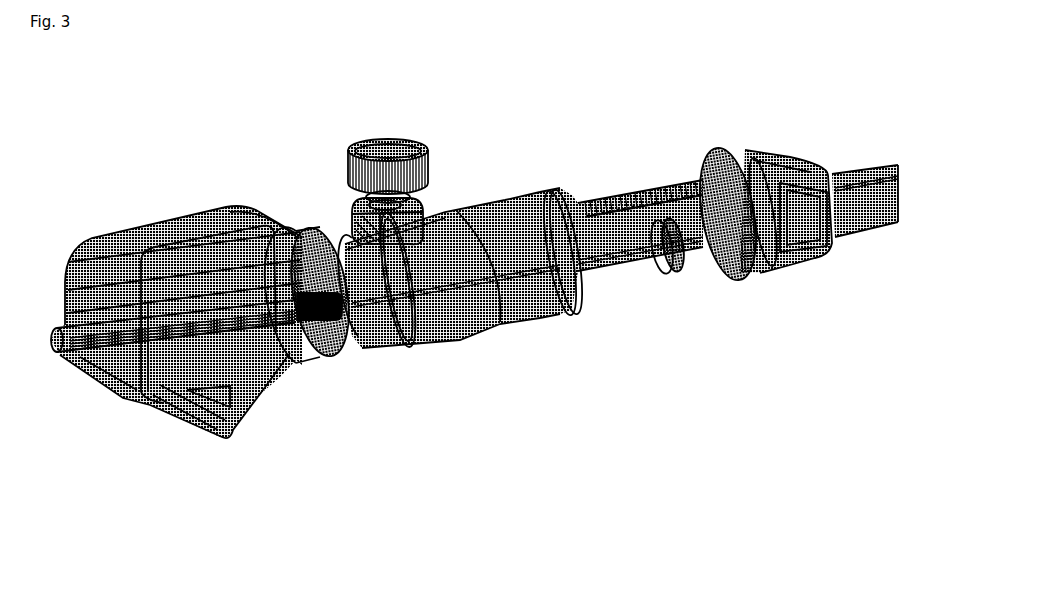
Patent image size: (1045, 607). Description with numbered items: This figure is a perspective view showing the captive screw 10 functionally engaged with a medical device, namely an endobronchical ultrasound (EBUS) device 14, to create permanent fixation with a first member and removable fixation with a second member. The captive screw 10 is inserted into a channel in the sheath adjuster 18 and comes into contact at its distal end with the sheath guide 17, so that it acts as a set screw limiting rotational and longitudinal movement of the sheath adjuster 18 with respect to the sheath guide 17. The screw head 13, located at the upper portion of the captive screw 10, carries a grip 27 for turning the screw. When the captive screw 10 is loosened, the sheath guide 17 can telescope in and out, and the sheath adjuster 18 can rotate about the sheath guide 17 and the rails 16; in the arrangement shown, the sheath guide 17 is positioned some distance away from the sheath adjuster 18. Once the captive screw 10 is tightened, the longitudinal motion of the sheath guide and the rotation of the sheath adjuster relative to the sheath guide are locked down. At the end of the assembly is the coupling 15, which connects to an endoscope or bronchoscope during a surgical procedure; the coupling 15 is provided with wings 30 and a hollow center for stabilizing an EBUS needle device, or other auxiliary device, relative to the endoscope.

The captive screw 10 is at (386, 146).
The screw head 13 is at (357, 145).
The endobronchical ultrasound (EBUS) device 14 is at (684, 75).
The coupling 15 is at (183, 258).
The rails 16 is at (662, 205).
The sheath guide 17 is at (313, 356).
The sheath adjuster 18 is at (505, 212).
The grip 27 is at (430, 170).
The wings 30 is at (203, 424).